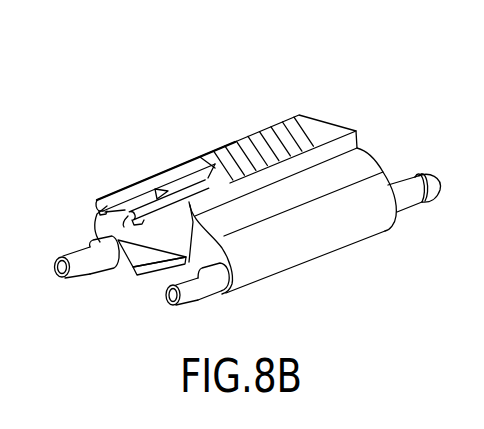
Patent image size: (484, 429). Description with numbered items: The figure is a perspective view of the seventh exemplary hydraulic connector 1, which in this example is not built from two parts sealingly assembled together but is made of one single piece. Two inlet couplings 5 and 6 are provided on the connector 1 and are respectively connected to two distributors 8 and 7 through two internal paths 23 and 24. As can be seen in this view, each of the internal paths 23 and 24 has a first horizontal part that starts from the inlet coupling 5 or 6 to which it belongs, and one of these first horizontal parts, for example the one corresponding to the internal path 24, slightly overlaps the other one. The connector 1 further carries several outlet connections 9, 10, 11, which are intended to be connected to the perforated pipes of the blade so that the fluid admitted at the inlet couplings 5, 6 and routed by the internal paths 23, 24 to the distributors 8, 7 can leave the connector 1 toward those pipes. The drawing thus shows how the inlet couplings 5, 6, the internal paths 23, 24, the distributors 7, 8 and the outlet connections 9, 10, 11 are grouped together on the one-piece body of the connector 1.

The hydraulic connector 1 is at (226, 116).
The inlet coupling 5 is at (149, 222).
The inlet coupling 6 is at (97, 213).
The distributor 7 is at (237, 300).
The distributor 8 is at (125, 280).
The outlet connection 9 is at (174, 300).
The outlet connection 10 is at (72, 255).
The outlet connection 11 is at (422, 174).
The internal path 23 is at (175, 197).
The internal path 24 is at (150, 183).